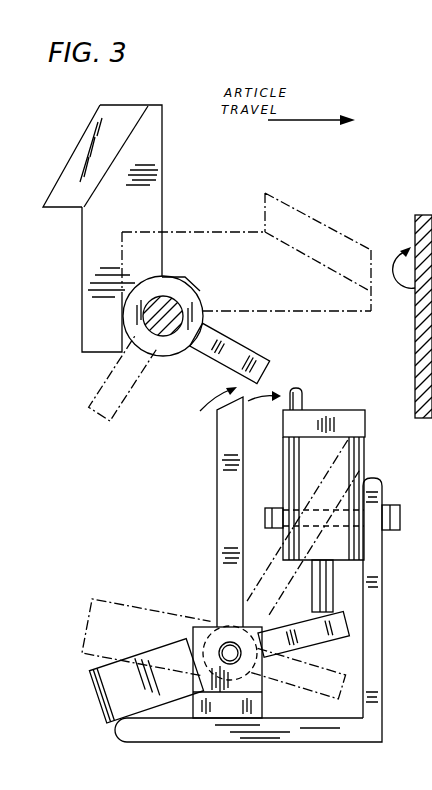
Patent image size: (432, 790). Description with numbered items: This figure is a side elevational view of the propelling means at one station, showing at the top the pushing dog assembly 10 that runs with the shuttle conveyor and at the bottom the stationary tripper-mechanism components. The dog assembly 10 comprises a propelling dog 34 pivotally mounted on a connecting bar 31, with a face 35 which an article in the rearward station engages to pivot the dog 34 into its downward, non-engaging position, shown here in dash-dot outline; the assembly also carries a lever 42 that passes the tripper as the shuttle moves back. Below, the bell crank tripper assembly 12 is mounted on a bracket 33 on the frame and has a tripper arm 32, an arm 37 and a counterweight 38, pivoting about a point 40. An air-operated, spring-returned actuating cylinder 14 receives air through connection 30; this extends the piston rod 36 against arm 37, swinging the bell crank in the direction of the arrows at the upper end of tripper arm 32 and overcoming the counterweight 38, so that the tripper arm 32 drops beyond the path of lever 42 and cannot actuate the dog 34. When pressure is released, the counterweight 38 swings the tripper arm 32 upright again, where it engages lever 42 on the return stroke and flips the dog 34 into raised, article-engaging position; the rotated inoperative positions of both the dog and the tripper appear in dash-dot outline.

The dog assembly 10 is at (171, 227).
The bell crank tripper assembly 12 is at (199, 504).
The actuating cylinder 14 is at (367, 412).
The connection 30 is at (302, 400).
The connecting bar 31 is at (158, 330).
The tripper arm 32 is at (217, 452).
The bracket 33 is at (383, 726).
The propelling dog 34 is at (164, 161).
The face 35 is at (76, 149).
The piston rod 36 is at (334, 600).
The arm 37 is at (323, 640).
The counterweight 38 is at (124, 603).
The pivot pin 40 is at (223, 648).
The lever 42 is at (234, 341).